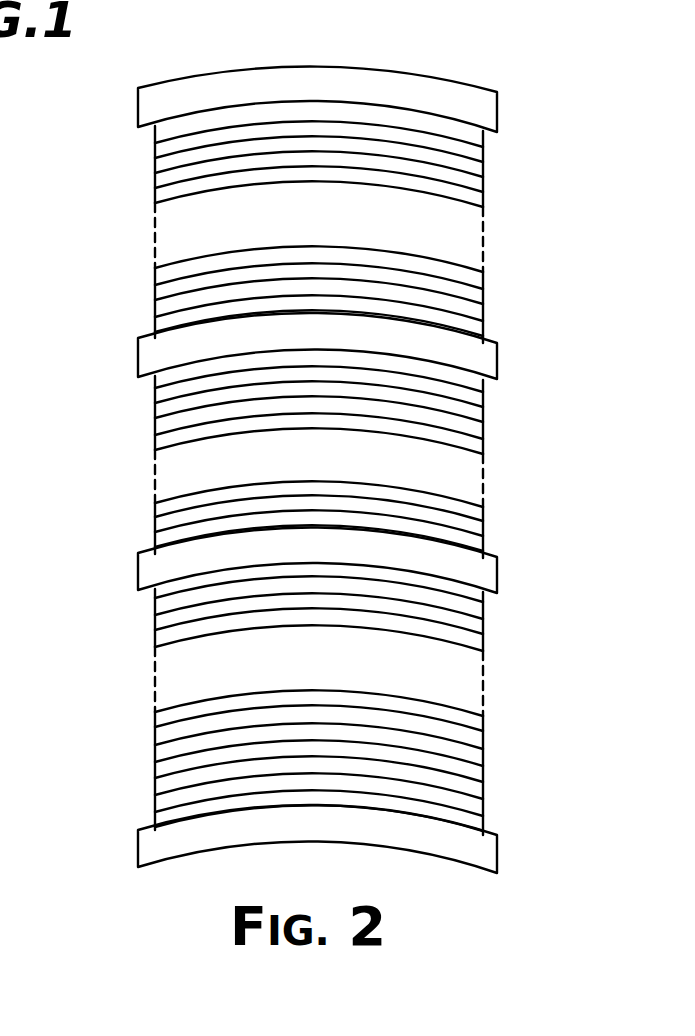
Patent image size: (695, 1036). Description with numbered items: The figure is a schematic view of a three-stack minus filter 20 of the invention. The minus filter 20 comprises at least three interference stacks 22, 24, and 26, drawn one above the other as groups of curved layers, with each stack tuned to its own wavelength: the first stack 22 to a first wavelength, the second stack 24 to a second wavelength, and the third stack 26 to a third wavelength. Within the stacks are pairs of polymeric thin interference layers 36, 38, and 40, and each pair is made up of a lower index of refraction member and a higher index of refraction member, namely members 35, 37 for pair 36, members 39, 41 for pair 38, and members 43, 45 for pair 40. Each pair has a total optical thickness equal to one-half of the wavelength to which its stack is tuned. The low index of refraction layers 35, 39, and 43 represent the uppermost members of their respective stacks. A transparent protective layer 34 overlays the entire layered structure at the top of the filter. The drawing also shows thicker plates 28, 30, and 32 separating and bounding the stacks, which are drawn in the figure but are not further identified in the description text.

The minus filter 20 is at (353, 58).
The interference stack 22 is at (92, 587).
The interference stack 24 is at (92, 375).
The interference stack 26 is at (88, 100).
The bottom end plate 28 is at (172, 850).
The intermediate plate 30 is at (140, 562).
The intermediate plate 32 is at (140, 343).
The transparent protective layer 34 is at (189, 90).
The lower index of refraction member 35 is at (486, 598).
The pair of polymeric thin interference layers 36 is at (492, 718).
The higher index of refraction member 37 is at (487, 809).
The pair of polymeric thin interference layers 38 is at (492, 448).
The lower index of refraction member 39 is at (486, 382).
The pair of polymeric thin interference layers 40 is at (490, 268).
The higher index of refraction member 41 is at (488, 525).
The lower index of refraction member 43 is at (484, 131).
The higher index of refraction member 45 is at (488, 313).